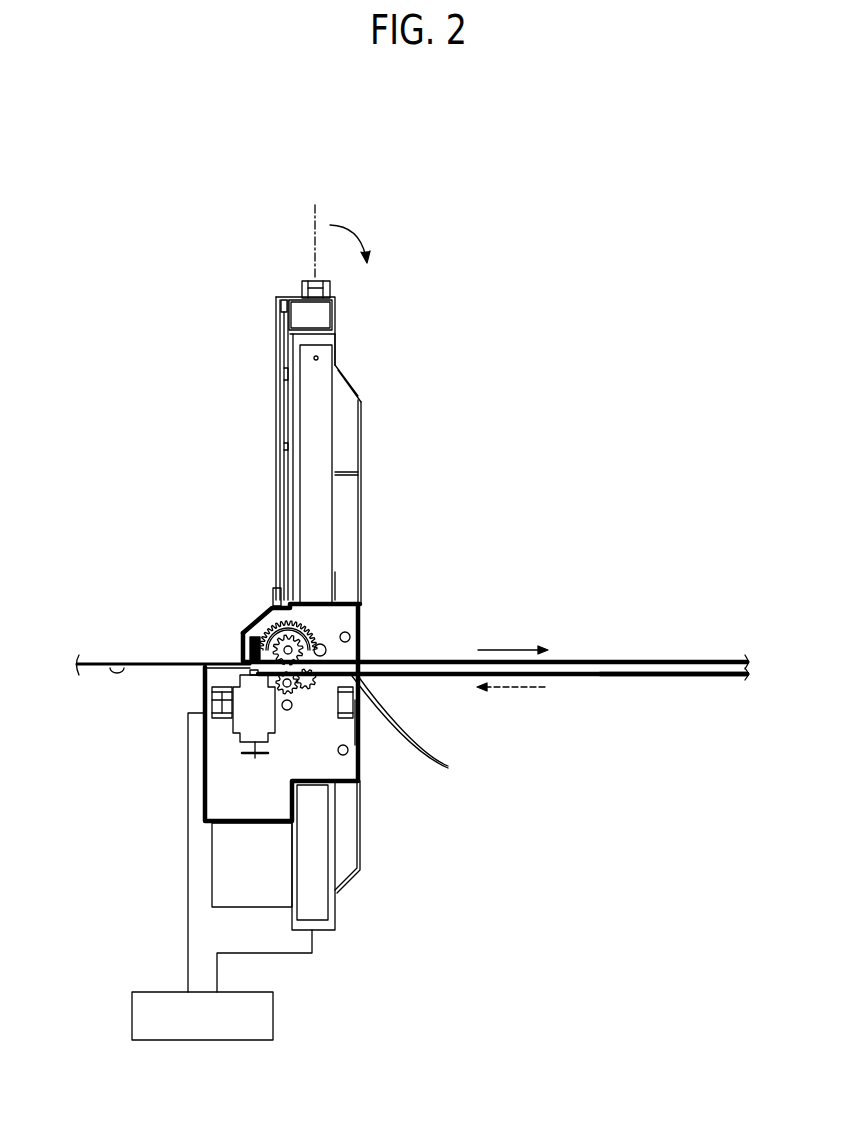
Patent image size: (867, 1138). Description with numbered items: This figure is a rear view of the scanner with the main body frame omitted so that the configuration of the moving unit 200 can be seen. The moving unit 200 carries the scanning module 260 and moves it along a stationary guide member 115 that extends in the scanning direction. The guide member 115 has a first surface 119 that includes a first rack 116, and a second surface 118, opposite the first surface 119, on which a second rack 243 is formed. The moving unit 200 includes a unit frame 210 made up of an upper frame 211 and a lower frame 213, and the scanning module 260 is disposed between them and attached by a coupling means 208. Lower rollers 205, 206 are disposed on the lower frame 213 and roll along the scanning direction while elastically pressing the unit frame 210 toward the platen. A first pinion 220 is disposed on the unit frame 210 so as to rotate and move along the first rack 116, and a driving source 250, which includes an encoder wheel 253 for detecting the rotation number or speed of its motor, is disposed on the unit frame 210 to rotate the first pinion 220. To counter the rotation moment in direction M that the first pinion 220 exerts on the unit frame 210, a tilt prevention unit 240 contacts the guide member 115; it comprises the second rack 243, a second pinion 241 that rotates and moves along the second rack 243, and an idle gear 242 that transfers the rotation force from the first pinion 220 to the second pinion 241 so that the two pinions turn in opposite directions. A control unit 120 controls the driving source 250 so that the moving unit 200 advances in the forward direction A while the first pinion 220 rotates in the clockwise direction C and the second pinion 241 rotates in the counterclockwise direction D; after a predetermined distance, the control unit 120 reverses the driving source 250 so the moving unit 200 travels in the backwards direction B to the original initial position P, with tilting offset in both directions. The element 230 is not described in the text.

The moving unit 200 is at (358, 370).
The scanning module 260 is at (320, 405).
The unit frame 210 is at (440, 460).
The upper frame 211 is at (360, 462).
The lower frame 213 is at (348, 600).
The first pinion 220 is at (258, 622).
The cleaning member 230 is at (250, 647).
The coupling means 208 is at (282, 705).
The lower roller 205 is at (215, 710).
The driving source 250 is at (245, 723).
The encoder wheel 253 is at (247, 762).
The lower roller 206 is at (355, 692).
The second surface 118 is at (110, 667).
The first surface 119 is at (150, 662).
The guide member 115 is at (640, 670).
The first rack 116 is at (690, 660).
The second pinion 241 is at (358, 748).
The idle gear 242 is at (413, 731).
The second rack 243 is at (670, 730).
The tilt prevention unit 240 is at (549, 748).
The control unit 120 is at (203, 1041).
The original initial position P is at (312, 207).
The rotation moment direction M is at (362, 229).
The forward direction A is at (510, 650).
The backwards direction B is at (504, 690).
The clockwise direction C is at (310, 628).
The counterclockwise direction D is at (295, 693).